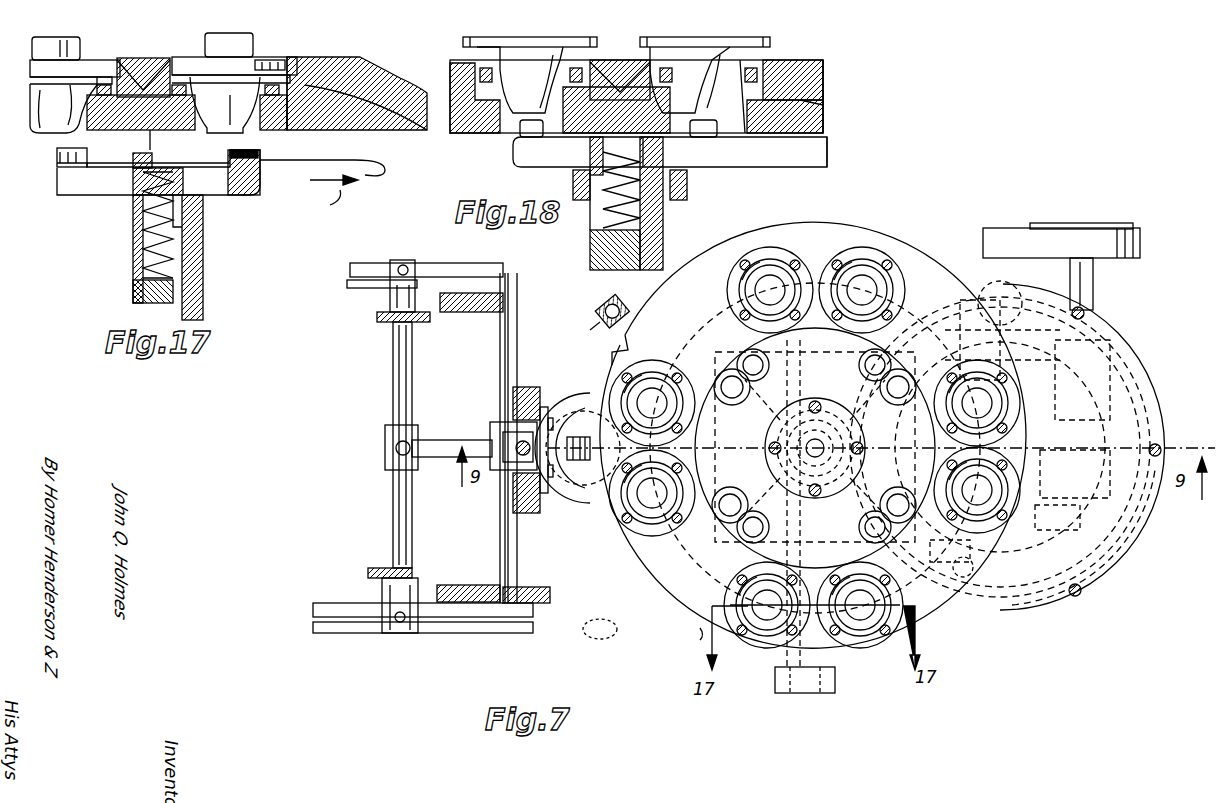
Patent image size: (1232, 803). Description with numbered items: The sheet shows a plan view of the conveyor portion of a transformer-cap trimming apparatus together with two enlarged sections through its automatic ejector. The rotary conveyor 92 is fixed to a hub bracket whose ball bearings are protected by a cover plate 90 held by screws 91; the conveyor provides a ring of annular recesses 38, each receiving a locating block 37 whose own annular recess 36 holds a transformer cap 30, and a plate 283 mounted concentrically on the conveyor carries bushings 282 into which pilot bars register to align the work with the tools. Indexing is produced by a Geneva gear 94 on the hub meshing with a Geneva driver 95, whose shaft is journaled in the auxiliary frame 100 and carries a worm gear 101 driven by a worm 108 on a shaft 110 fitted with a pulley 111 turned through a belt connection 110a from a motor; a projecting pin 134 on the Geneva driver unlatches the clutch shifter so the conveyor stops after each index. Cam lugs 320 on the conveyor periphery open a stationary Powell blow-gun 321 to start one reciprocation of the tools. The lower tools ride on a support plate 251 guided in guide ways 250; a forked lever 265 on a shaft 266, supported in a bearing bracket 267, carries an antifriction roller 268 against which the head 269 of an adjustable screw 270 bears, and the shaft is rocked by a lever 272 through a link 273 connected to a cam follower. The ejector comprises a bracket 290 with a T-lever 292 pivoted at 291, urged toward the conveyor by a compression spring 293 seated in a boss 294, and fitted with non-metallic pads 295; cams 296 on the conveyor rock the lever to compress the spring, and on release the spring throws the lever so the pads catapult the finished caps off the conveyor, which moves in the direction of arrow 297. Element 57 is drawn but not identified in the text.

In FIG. 17, the transformer cap 30 is at (47, 118).
In FIG. 18, the transformer cap 30 is at (483, 46).
In FIG. 17, the annular recess 36 is at (298, 62).
In FIG. 18, the annular recess 36 is at (605, 62).
In FIG. 17, the locating block 37 is at (148, 58).
In FIG. 18, the locating block 37 is at (805, 60).
In FIG. 7, the locating block 37 is at (655, 375).
In FIG. 17, the annular recess 38 is at (407, 133).
In FIG. 18, the annular recess 38 is at (823, 98).
In FIG. 17, the plate 57 is at (278, 120).
In FIG. 18, the plate 57 is at (742, 150).
In FIG. 7, the cover plate 90 is at (812, 407).
In FIG. 7, the screws 91 is at (818, 494).
In FIG. 17, the conveyor 92 is at (385, 70).
In FIG. 18, the conveyor 92 is at (823, 80).
In FIG. 7, the conveyor 92 is at (677, 602).
In FIG. 7, the Geneva gear 94 is at (622, 604).
In FIG. 7, the Geneva driver 95 is at (1035, 595).
In FIG. 7, the auxiliary frame 100 is at (1130, 490).
In FIG. 7, the worm gear 101 is at (1047, 410).
In FIG. 7, the worm 108 is at (1105, 425).
In FIG. 7, the shaft 110 is at (1093, 295).
In FIG. 7, the belt connection 110a is at (1010, 228).
In FIG. 7, the pulley 111 is at (1060, 223).
In FIG. 7, the projecting pin 134 is at (963, 577).
In FIG. 7, the guide ways 250 is at (518, 387).
In FIG. 7, the support plate 251 is at (533, 510).
In FIG. 7, the lever 265 is at (462, 430).
In FIG. 7, the shaft 266 is at (398, 510).
In FIG. 7, the bearing bracket 267 is at (400, 295).
In FIG. 7, the antifriction roller 268 is at (560, 490).
In FIG. 7, the head 269 is at (550, 418).
In FIG. 7, the screw 270 is at (515, 460).
In FIG. 7, the lever 272 is at (468, 618).
In FIG. 7, the link 273 is at (550, 588).
In FIG. 7, the bushings 282 is at (728, 522).
In FIG. 7, the plate 283 is at (750, 543).
In FIG. 17, the bracket 290 is at (192, 276).
In FIG. 18, the bracket 290 is at (663, 245).
In FIG. 18, the pivot 291 is at (573, 185).
In FIG. 17, the T-lever 292 is at (242, 193).
In FIG. 18, the T-lever 292 is at (692, 152).
In FIG. 17, the compression spring 293 is at (143, 217).
In FIG. 18, the compression spring 293 is at (605, 228).
In FIG. 17, the boss 294 is at (136, 293).
In FIG. 18, the boss 294 is at (595, 268).
In FIG. 17, the non-metallic pads 295 is at (262, 158).
In FIG. 18, the non-metallic pads 295 is at (520, 130).
In FIG. 17, the cams 296 is at (373, 152).
In FIG. 18, the cams 296 is at (778, 152).
In FIG. 17, the arrow 297 is at (334, 200).
In FIG. 7, the cam lugs 320 is at (700, 640).
In FIG. 7, the Powell blow-gun 321 is at (603, 319).